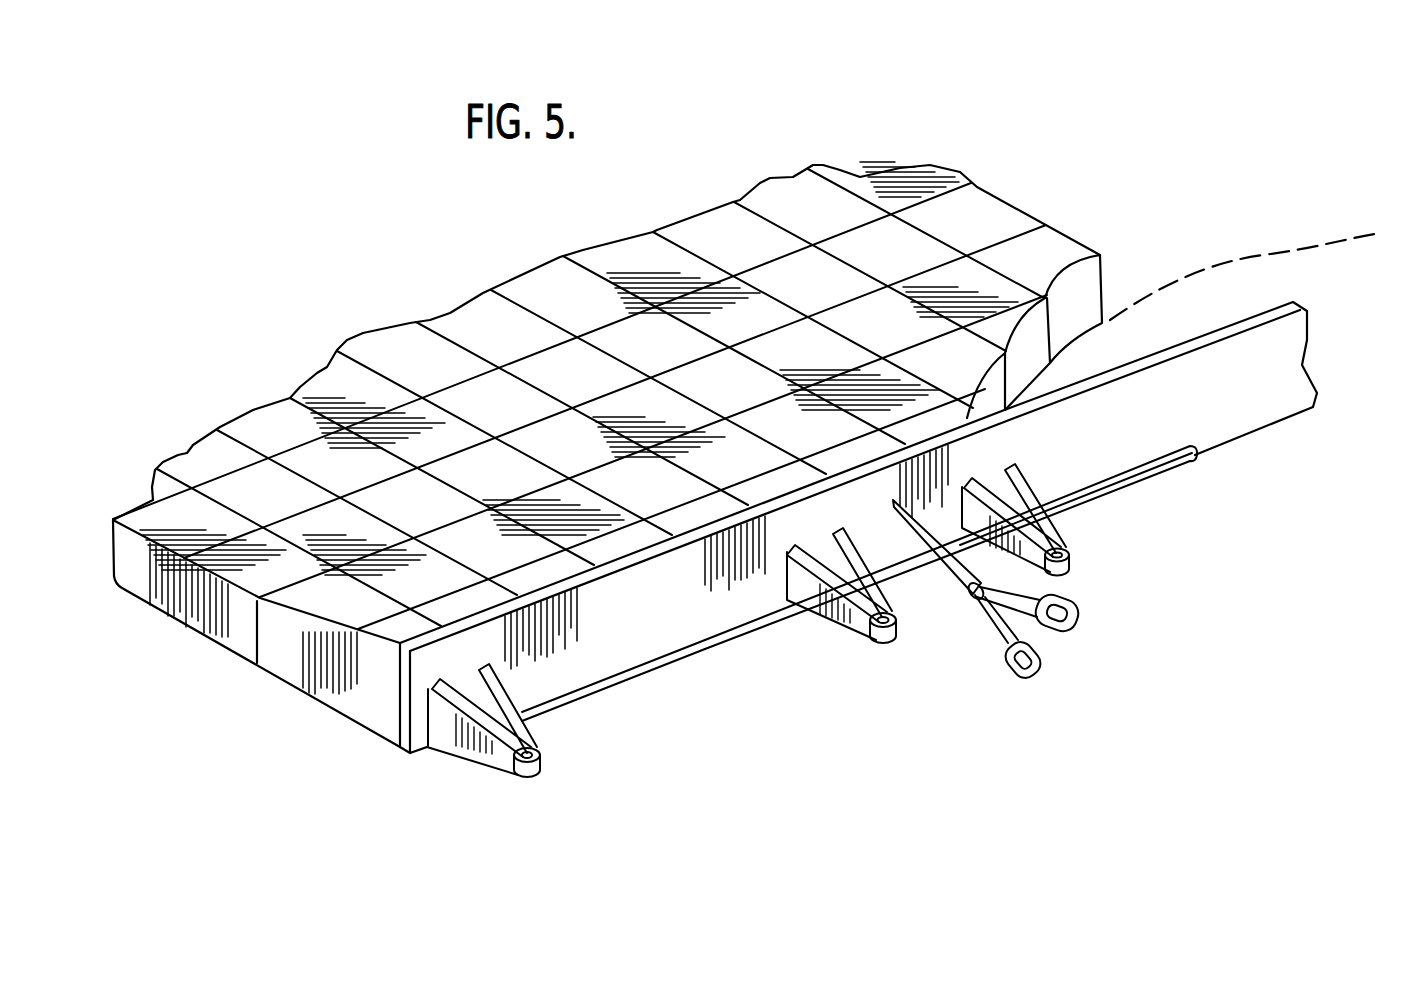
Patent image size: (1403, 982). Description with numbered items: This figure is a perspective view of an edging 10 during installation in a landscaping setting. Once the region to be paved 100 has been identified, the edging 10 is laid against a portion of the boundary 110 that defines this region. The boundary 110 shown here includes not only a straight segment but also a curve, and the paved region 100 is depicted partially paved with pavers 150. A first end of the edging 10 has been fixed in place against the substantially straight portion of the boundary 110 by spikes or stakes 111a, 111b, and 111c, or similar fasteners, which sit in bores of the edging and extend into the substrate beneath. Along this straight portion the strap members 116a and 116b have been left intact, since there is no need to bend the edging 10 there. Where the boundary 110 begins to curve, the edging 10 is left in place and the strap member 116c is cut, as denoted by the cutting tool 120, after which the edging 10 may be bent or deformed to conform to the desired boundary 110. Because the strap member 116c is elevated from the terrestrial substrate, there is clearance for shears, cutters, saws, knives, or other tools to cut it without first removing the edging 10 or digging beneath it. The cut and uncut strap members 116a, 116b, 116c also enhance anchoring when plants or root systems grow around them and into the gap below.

The edging 10 is at (1290, 345).
The region to be paved 100 is at (716, 170).
The boundary 110 is at (1258, 253).
The pavers 150 is at (470, 337).
The spike 111a is at (527, 775).
The spike 111b is at (693, 705).
The spike 111c is at (883, 640).
The strap member 116a is at (585, 690).
The strap member 116b is at (757, 632).
The strap member 116c is at (1028, 492).
The cutting tool 120 is at (1043, 653).